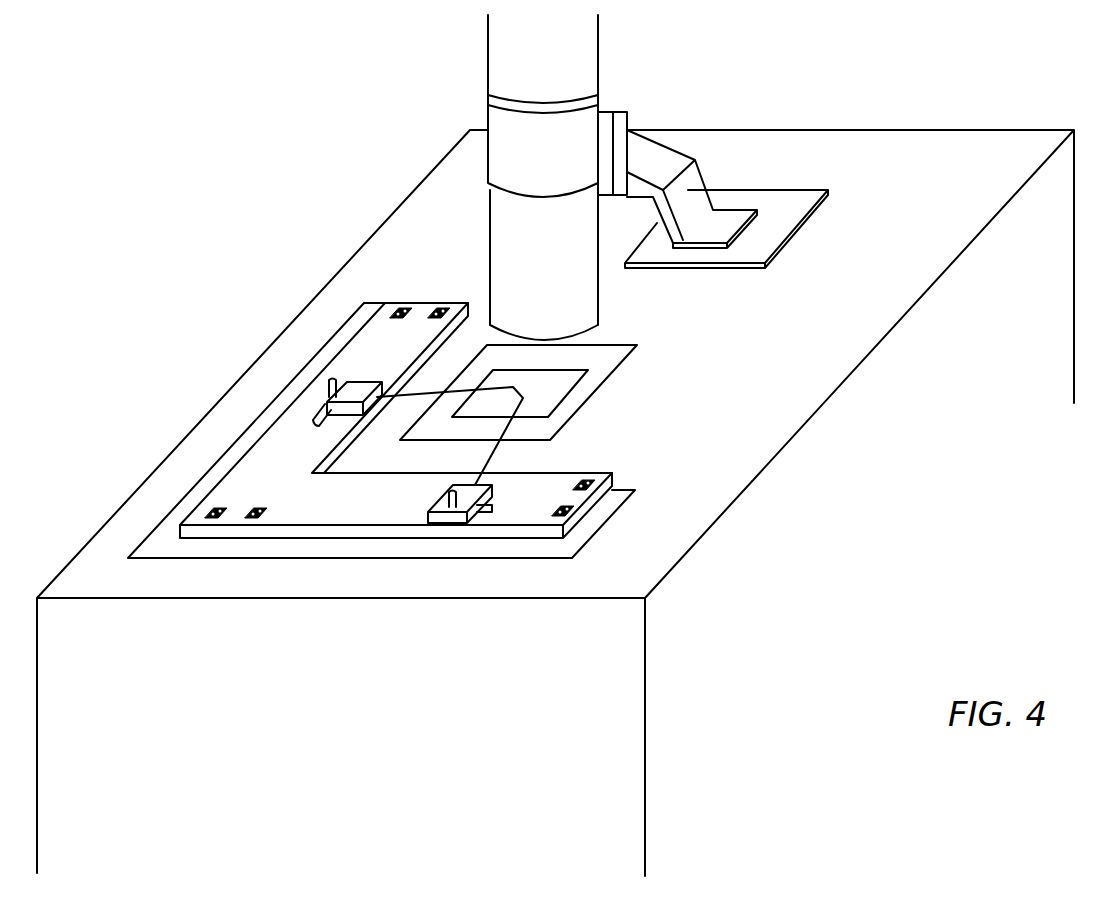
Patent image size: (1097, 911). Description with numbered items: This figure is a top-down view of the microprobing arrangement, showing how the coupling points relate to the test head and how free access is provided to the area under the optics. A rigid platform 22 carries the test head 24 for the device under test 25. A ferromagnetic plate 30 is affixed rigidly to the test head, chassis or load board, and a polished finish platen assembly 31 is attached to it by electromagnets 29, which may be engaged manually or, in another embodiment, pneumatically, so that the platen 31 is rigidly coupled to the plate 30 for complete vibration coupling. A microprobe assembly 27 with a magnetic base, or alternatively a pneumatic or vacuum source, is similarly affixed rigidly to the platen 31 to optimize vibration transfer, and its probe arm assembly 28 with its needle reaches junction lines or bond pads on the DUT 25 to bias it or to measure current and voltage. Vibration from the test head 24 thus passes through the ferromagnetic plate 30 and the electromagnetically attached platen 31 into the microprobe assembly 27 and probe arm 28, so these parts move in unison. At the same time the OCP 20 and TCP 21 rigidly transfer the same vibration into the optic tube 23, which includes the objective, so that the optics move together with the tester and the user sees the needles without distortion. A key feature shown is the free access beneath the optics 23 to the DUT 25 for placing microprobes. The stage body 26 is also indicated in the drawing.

The OCP 20 is at (583, 122).
The TCP 21 is at (790, 200).
The rigid platform 22 is at (930, 158).
The optic tube 23 is at (588, 280).
The test head 24 is at (613, 362).
The device under test 25 is at (558, 390).
The stage body 26 is at (741, 622).
The microprobe assembly 27 is at (327, 400).
The probe arm assembly 28 is at (488, 452).
The electromagnets 29 is at (585, 482).
The ferromagnetic plate 30 is at (612, 497).
The polished finish platen assembly 31 is at (278, 515).